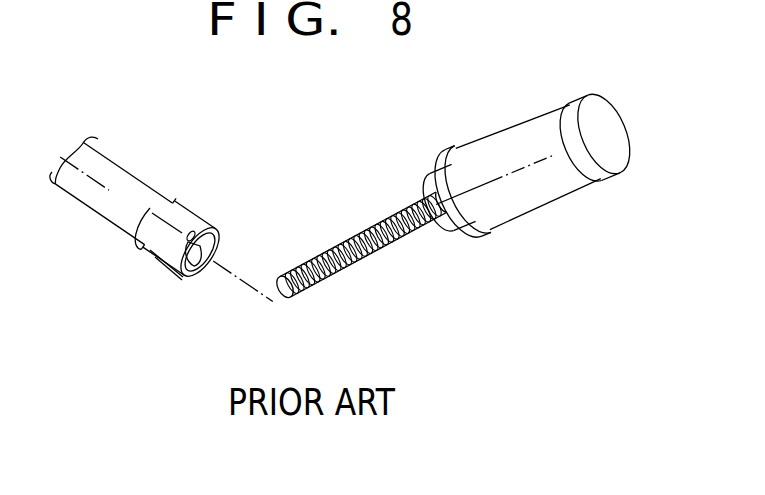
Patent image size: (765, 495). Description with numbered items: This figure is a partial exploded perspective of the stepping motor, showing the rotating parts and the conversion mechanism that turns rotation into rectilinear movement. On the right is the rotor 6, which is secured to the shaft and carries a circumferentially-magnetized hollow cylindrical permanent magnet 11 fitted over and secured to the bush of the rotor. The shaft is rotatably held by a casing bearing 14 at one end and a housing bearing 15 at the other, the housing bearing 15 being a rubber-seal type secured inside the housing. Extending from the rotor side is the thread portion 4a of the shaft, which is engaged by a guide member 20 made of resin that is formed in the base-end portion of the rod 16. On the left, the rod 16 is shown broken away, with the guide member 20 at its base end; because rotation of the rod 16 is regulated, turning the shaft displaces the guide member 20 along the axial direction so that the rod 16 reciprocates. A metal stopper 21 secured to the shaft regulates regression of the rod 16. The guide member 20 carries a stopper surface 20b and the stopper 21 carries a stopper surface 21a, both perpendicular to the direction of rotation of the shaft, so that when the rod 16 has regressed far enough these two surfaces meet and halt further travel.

The rod 16 is at (116, 163).
The guide member 20 is at (171, 198).
The stopper surface 20b is at (214, 258).
The thread portion 4a is at (397, 241).
The stopper 21 is at (448, 233).
The stopper surface 21a is at (447, 182).
The housing bearing 15 is at (489, 238).
The permanent magnet 11 is at (541, 208).
The rotor 6 is at (510, 128).
The casing bearing 14 is at (616, 174).